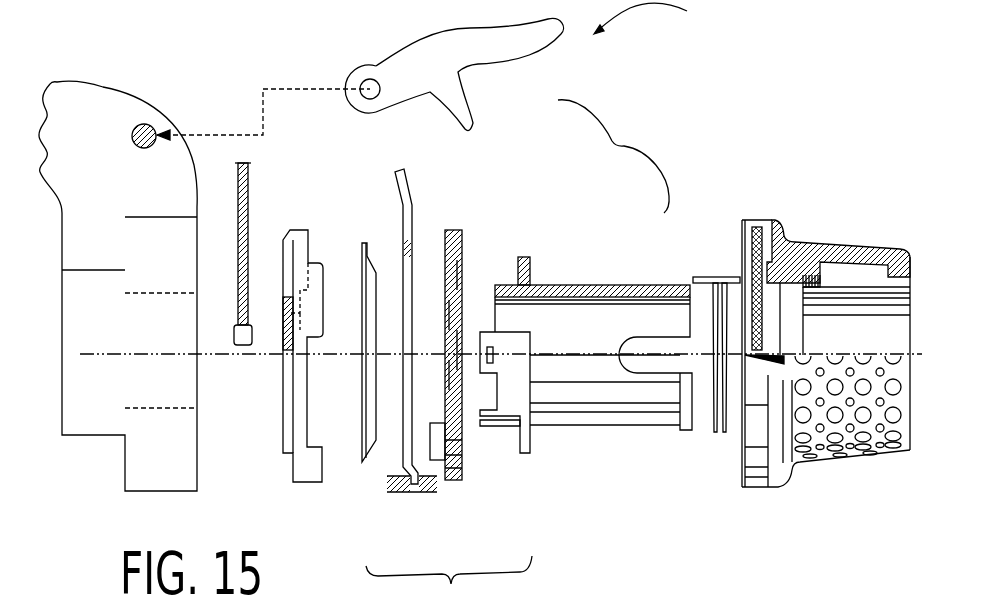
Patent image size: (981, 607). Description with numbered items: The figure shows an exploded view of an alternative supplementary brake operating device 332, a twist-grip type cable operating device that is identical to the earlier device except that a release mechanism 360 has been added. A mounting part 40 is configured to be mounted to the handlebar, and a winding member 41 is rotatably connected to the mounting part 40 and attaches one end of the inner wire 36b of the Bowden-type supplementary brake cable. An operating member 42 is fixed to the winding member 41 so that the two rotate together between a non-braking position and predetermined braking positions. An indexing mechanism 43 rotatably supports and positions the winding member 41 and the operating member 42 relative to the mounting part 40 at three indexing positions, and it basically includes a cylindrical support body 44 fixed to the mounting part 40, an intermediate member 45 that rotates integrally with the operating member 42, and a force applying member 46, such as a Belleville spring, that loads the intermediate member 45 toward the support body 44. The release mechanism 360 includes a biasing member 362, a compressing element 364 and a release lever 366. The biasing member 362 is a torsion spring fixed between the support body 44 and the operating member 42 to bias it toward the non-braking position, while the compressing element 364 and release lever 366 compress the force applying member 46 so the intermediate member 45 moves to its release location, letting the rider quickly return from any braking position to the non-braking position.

The mounting part 40 is at (110, 88).
The inner wire 36b is at (250, 193).
The winding member 41 is at (312, 483).
The operating member 42 is at (803, 242).
The indexing mechanism 43 is at (449, 581).
The cylindrical support body 44 is at (523, 455).
The intermediate member 45 is at (455, 483).
The force applying member 46 is at (363, 467).
The supplementary brake operating device 332 is at (661, 17).
The release mechanism 360 is at (613, 156).
The biasing member 362 is at (707, 277).
The compressing element 364 is at (410, 187).
The release lever 366 is at (487, 66).